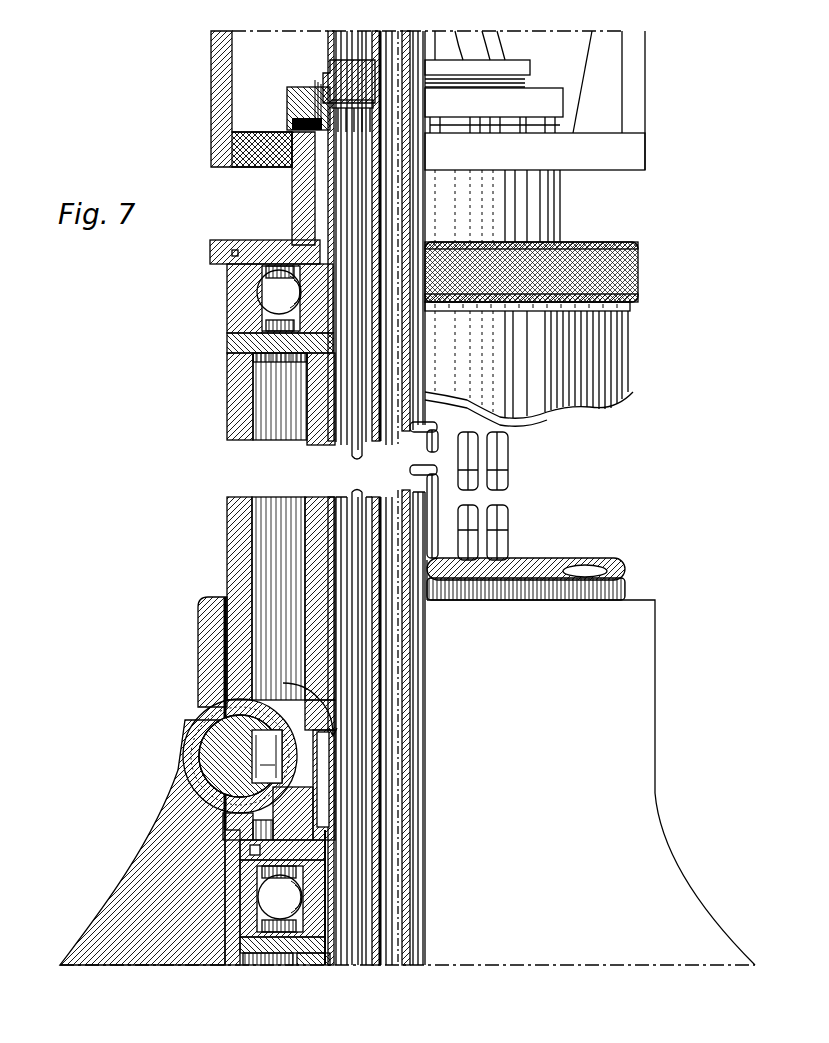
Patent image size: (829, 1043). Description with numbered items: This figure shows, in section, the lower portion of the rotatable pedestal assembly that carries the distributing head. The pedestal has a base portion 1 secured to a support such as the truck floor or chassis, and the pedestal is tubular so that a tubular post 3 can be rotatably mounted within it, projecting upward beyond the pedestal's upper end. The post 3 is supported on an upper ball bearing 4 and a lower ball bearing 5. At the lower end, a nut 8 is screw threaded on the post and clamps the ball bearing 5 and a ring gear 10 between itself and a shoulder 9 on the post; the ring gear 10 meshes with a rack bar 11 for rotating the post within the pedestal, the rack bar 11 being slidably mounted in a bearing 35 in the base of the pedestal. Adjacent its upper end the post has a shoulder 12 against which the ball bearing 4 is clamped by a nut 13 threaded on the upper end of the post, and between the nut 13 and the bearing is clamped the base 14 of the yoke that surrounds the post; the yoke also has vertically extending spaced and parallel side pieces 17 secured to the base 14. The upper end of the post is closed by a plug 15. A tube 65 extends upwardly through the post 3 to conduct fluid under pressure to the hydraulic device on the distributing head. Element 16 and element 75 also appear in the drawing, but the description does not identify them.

The base portion 1 is at (148, 908).
The tubular post 3 is at (312, 540).
The ball bearing 4 is at (265, 296).
The ball bearing 5 is at (265, 968).
The nut 8 is at (401, 964).
The shoulder 9 is at (283, 683).
The ring gear 10 is at (215, 773).
The rack bar 11 is at (650, 128).
The shoulder 12 is at (315, 376).
The nut 13 is at (300, 100).
The base of yoke 14 is at (296, 209).
The plug 15 is at (323, 66).
The plate 16 is at (592, 162).
The side pieces 17 is at (631, 73).
The bearing 35 is at (180, 714).
The tube 65 is at (345, 568).
The rotor 75 is at (630, 393).